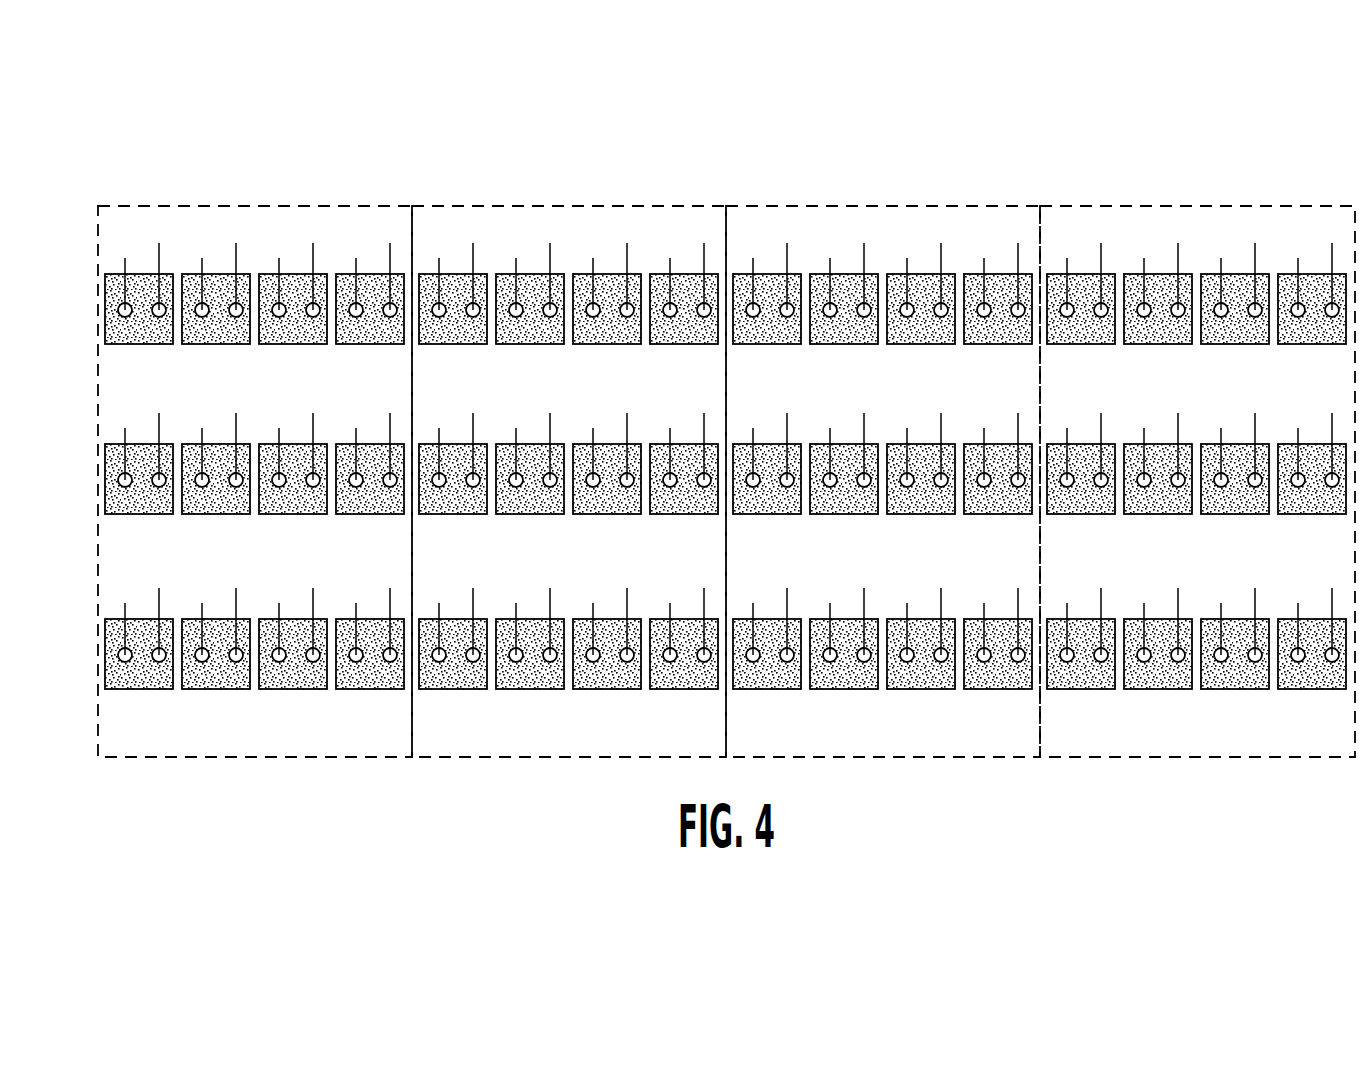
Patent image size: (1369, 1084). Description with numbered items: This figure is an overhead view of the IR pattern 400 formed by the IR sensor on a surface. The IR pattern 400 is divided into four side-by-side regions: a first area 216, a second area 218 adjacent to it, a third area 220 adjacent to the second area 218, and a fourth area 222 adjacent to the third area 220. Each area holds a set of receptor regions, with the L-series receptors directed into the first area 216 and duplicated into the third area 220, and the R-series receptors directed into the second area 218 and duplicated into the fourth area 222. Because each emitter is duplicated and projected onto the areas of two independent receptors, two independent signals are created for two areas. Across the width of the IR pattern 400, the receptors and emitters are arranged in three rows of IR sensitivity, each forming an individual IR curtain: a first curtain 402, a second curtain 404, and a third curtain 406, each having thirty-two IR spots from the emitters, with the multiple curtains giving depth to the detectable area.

The IR pattern 400 is at (100, 82).
The first curtain 402 is at (92, 298).
The second curtain 404 is at (92, 468).
The third curtain 406 is at (92, 646).
The first area 216 is at (180, 213).
The second area 218 is at (450, 220).
The third area 220 is at (751, 217).
The fourth area 222 is at (1064, 216).